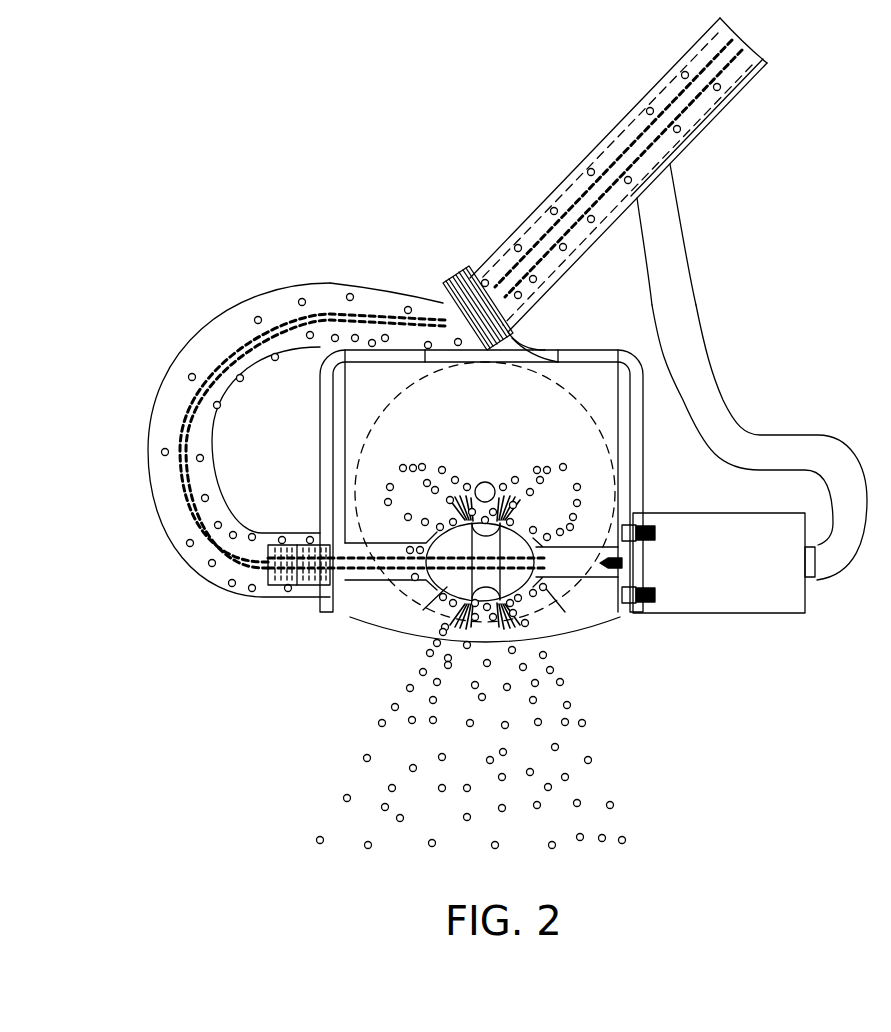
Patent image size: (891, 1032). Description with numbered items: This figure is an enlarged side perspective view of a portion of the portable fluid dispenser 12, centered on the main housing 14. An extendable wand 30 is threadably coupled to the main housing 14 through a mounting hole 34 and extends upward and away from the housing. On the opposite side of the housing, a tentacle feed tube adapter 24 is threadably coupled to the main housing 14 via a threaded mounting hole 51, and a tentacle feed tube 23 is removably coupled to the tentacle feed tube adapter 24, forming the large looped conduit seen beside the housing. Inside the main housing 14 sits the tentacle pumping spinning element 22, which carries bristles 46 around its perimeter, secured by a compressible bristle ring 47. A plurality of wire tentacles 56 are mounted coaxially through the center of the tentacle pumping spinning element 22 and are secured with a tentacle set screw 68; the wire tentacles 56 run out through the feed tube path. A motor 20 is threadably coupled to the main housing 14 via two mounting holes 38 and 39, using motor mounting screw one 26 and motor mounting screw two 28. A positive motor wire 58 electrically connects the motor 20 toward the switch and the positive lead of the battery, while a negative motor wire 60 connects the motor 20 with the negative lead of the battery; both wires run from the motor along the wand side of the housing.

The portable fluid dispenser 12 is at (535, 148).
The extendable wand 30 is at (720, 114).
The mounting hole 34 is at (467, 273).
The positive motor wire 58 is at (640, 283).
The negative motor wire 60 is at (703, 347).
The main housing 14 is at (582, 348).
The tentacle feed tube 23 is at (163, 527).
The wire tentacles 56 is at (227, 350).
The threaded mounting hole 51 is at (317, 593).
The tentacle feed tube adapter 24 is at (372, 582).
The tentacle pumping spinning element 22 is at (437, 597).
The bristles 46 is at (460, 490).
The tentacle set screw 68 is at (533, 500).
The compressible bristle ring 47 is at (540, 593).
The mounting hole 38 is at (613, 523).
The motor mounting screw two 28 is at (655, 531).
The motor mounting screw one 26 is at (657, 593).
The mounting hole 39 is at (613, 603).
The motor 20 is at (752, 602).